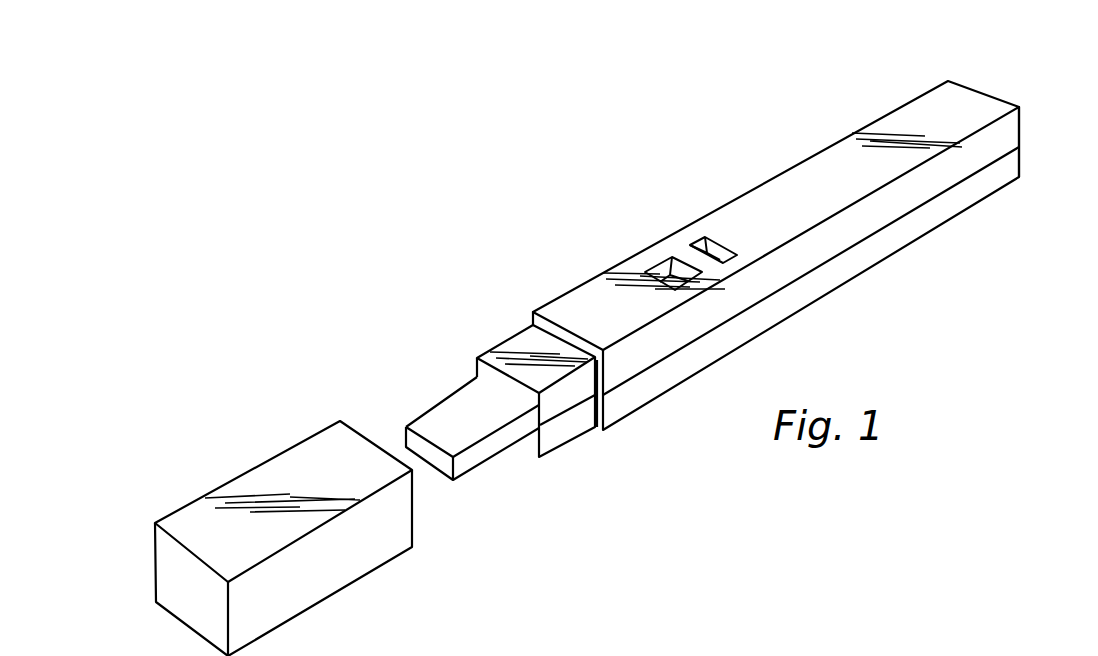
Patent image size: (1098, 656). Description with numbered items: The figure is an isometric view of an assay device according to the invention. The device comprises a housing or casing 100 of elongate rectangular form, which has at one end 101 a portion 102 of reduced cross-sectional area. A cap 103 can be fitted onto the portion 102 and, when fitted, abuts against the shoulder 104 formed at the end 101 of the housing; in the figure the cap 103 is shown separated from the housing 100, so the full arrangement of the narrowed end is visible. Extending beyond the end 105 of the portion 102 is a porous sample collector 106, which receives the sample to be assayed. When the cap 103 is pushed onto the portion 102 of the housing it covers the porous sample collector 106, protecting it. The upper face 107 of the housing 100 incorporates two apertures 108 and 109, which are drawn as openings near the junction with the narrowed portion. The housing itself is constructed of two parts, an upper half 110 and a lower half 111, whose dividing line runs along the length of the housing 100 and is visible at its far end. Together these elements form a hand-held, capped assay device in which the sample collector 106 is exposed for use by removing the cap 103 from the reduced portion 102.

The housing 100 is at (917, 223).
The end of housing 101 is at (533, 312).
The portion of reduced cross-sectional area 102 is at (507, 348).
The cap 103 is at (258, 480).
The shoulder 104 is at (601, 415).
The end of portion 105 is at (533, 453).
The porous sample collector 106 is at (485, 452).
The upper face of housing 107 is at (787, 183).
The aperture 108 is at (662, 272).
The aperture 109 is at (712, 250).
The upper half of housing 110 is at (1019, 117).
The lower half of housing 111 is at (1019, 173).